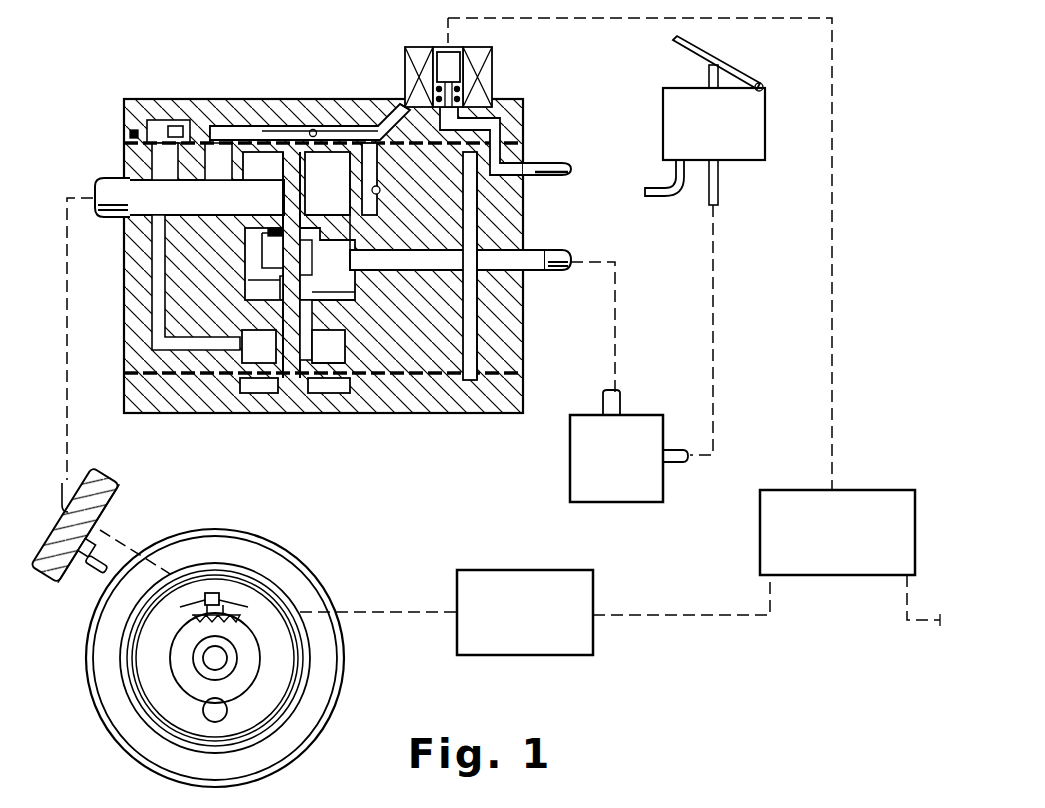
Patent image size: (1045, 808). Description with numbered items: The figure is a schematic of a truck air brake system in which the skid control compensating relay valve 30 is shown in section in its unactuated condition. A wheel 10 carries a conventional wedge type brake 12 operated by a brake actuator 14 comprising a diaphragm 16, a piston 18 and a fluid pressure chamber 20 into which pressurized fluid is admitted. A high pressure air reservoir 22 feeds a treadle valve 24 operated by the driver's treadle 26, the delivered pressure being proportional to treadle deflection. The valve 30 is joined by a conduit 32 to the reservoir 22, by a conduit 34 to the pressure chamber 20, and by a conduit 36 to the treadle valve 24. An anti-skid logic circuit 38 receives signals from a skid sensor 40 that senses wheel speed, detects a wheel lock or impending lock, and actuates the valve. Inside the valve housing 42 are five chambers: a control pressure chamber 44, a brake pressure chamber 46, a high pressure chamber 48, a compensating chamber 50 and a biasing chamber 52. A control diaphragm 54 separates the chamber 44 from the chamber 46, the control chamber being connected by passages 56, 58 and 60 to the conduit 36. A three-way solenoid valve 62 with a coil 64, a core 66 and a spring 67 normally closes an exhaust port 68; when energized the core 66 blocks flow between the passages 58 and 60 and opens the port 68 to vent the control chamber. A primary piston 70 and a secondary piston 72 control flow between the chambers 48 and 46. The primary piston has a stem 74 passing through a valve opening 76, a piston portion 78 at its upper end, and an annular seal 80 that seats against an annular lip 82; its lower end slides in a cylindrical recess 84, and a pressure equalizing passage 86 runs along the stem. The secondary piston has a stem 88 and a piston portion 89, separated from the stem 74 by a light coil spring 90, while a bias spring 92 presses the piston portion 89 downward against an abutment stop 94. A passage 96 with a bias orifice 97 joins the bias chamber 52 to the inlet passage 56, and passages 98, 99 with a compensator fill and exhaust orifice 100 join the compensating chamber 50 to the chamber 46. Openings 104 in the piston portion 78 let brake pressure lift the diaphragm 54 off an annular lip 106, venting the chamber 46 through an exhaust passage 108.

The wheel 10 is at (278, 552).
The wedge type brake 12 is at (270, 633).
The brake actuator 14 is at (106, 485).
The diaphragm 16 is at (112, 512).
The piston 18 is at (110, 546).
The fluid pressure chamber 20 is at (80, 483).
The high pressure air reservoir 22 is at (645, 415).
The treadle valve 24 is at (705, 135).
The treadle 26 is at (724, 63).
The skid control compensating relay valve 30 is at (278, 96).
The conduit 32 is at (542, 250).
The conduit 34 is at (104, 178).
The conduit 36 is at (547, 163).
The anti-skid logic circuit 38 is at (845, 490).
The skid sensor device 40 is at (537, 572).
The valve housing 42 is at (518, 356).
The control pressure chamber 44 is at (316, 129).
The brake pressure chamber 46 is at (316, 181).
The high pressure chamber 48 is at (340, 248).
The compensating chamber 50 is at (340, 340).
The biasing chamber 52 is at (325, 392).
The control diaphragm 54 is at (420, 147).
The passage 56 is at (522, 128).
The passage 58 is at (460, 100).
The passage 60 is at (392, 104).
The three-way solenoid valve 62 is at (472, 63).
The coil 64 is at (406, 60).
The core 66 is at (472, 58).
The spring 67 is at (462, 85).
The exhaust port 68 is at (445, 46).
The primary piston 70 is at (282, 192).
The secondary piston 72 is at (282, 310).
The stem portion 74 is at (292, 174).
The valve opening 76 is at (308, 217).
The piston portion 78 is at (272, 127).
The annular seal 80 is at (327, 264).
The annular lip 82 is at (268, 232).
The cylindrical recess 84 is at (260, 283).
The pressure equalizing passage 86 is at (262, 255).
The stem portion 88 is at (306, 322).
The piston portion 89 is at (332, 362).
The light coil spring 90 is at (345, 300).
The bias spring 92 is at (259, 346).
The abutment stop 94 is at (290, 392).
The passage 96 is at (500, 310).
The bias orifice 97 is at (477, 170).
The passage 98 is at (155, 250).
The passage 99 is at (188, 140).
The compensator fill and exhaust orifice 100 is at (162, 122).
The openings 104 is at (356, 150).
The annular lip 106 is at (232, 150).
The exhaust passage 108 is at (380, 190).